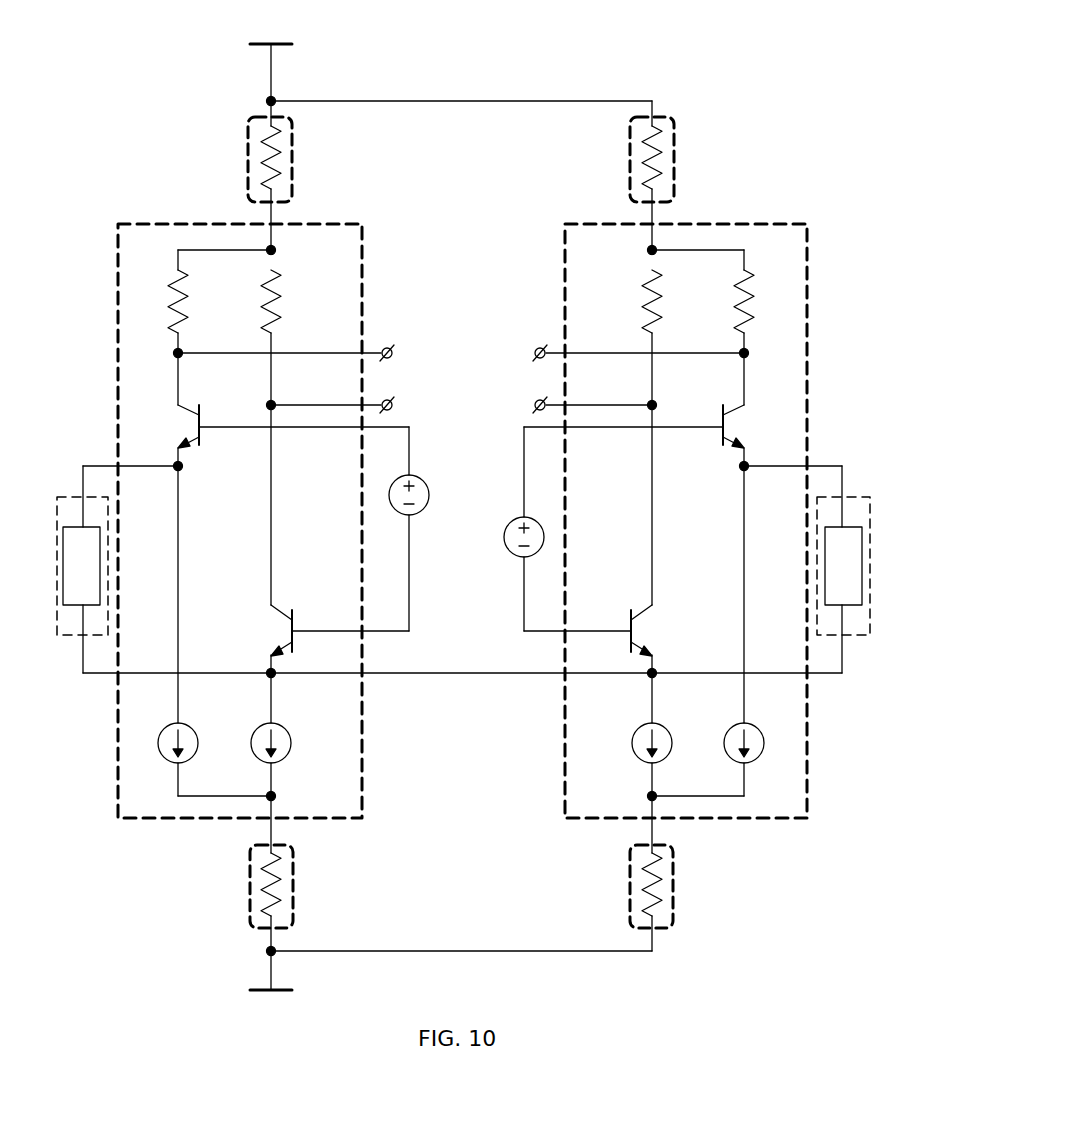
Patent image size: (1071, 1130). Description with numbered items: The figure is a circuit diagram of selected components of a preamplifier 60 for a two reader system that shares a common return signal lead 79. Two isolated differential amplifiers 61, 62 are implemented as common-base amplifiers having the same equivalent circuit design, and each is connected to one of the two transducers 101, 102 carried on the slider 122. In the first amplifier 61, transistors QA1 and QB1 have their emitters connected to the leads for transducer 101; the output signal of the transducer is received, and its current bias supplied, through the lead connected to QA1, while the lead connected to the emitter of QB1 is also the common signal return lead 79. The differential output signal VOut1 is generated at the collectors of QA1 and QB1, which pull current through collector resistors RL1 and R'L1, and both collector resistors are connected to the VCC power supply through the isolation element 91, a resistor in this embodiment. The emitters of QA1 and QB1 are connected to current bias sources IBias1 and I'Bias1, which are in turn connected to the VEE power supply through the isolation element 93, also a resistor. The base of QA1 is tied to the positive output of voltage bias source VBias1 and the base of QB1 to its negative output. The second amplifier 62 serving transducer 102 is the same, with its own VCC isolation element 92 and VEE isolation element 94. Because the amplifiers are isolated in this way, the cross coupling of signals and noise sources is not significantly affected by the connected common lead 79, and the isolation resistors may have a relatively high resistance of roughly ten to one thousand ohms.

The preamplifier 60 is at (706, 110).
The isolated differential amplifier 61 is at (161, 222).
The isolated differential amplifier 62 is at (760, 222).
The VCC power supply isolation element 91 is at (298, 158).
The VCC power supply isolation element 92 is at (624, 161).
The VEE power supply isolation element 93 is at (298, 890).
The VEE power supply isolation element 94 is at (624, 890).
The common signal return lead 79 is at (512, 682).
The transducer 101 is at (72, 606).
The transducer 102 is at (858, 606).
The slider 122 is at (862, 452).